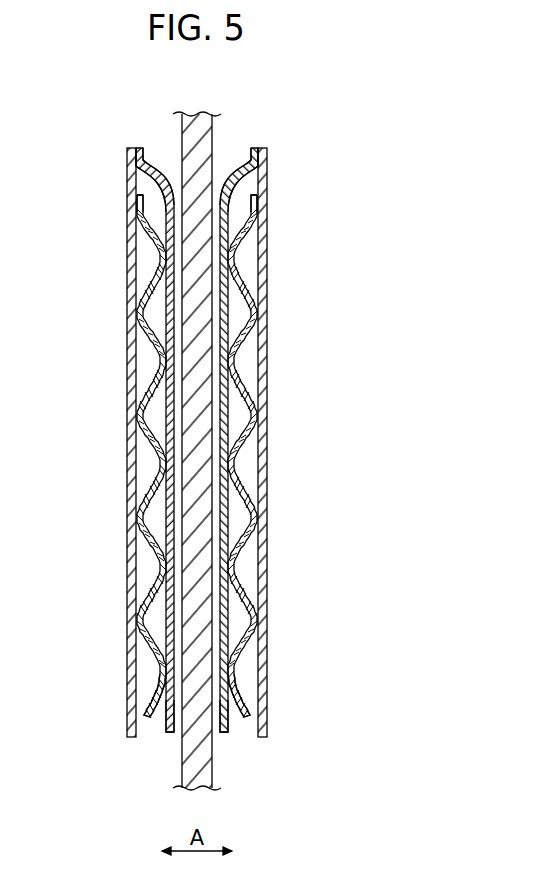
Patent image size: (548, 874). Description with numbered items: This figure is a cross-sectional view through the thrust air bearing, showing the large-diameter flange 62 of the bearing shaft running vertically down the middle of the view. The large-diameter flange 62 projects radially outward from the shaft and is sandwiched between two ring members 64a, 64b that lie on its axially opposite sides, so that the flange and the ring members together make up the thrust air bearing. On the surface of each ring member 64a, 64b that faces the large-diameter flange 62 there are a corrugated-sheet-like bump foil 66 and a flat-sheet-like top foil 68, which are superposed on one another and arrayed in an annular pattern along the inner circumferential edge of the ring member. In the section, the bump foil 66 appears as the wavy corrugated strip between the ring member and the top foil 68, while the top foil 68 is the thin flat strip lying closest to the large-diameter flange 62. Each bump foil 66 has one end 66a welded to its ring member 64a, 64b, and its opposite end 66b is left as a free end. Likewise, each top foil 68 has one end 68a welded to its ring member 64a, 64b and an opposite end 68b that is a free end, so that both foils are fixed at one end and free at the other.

The large-diameter flange 62 is at (200, 525).
The ring member 64a is at (274, 150).
The ring member 64b is at (120, 150).
The bump foil 66 is at (142, 283).
The end of bump foil 66a is at (140, 172).
The opposite end of bump foil 66b is at (150, 724).
The top foil 68 is at (172, 403).
The end of top foil 68a is at (141, 148).
The opposite end of top foil 68b is at (170, 737).